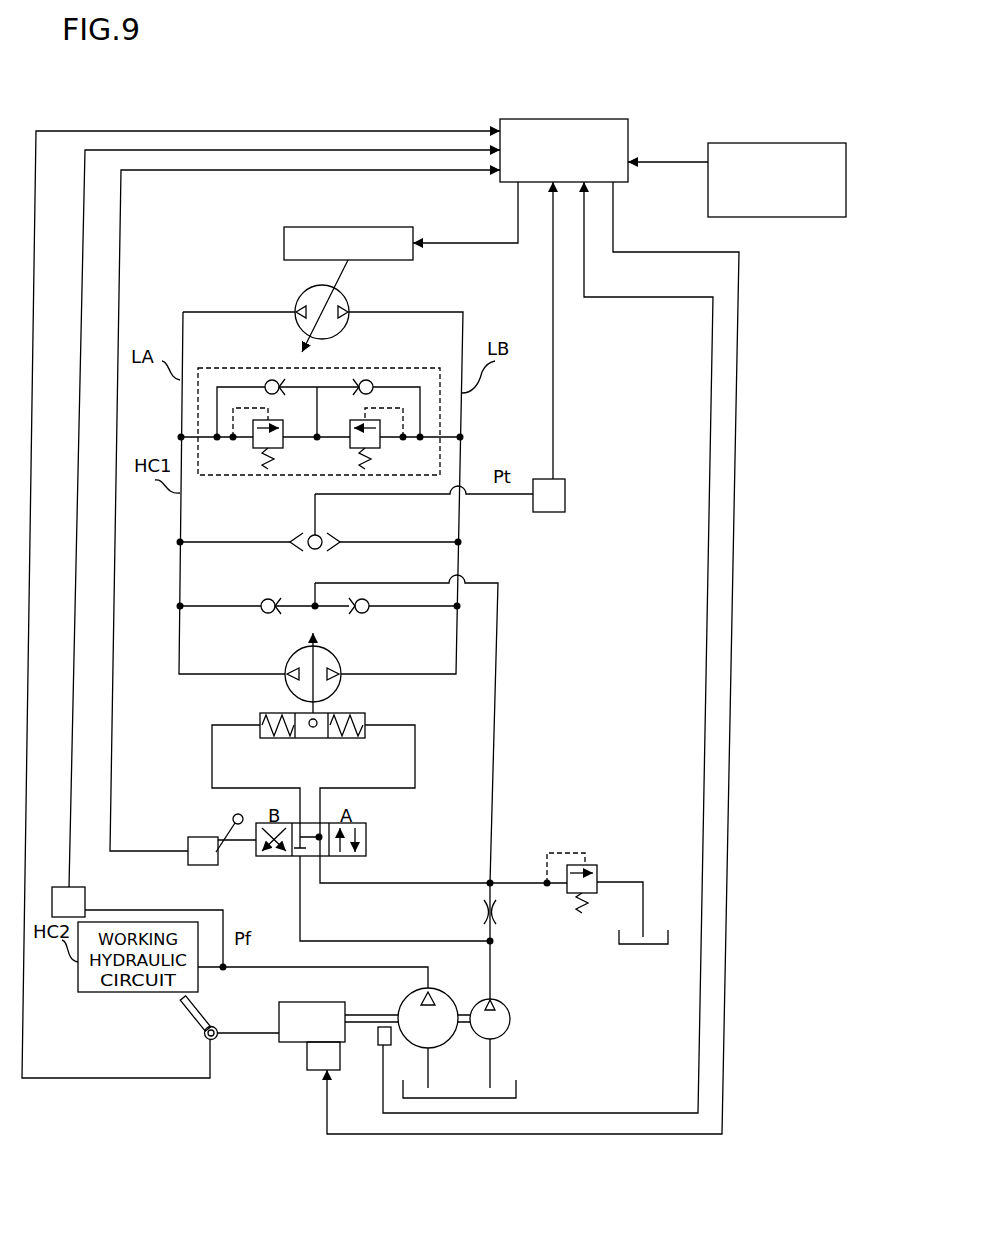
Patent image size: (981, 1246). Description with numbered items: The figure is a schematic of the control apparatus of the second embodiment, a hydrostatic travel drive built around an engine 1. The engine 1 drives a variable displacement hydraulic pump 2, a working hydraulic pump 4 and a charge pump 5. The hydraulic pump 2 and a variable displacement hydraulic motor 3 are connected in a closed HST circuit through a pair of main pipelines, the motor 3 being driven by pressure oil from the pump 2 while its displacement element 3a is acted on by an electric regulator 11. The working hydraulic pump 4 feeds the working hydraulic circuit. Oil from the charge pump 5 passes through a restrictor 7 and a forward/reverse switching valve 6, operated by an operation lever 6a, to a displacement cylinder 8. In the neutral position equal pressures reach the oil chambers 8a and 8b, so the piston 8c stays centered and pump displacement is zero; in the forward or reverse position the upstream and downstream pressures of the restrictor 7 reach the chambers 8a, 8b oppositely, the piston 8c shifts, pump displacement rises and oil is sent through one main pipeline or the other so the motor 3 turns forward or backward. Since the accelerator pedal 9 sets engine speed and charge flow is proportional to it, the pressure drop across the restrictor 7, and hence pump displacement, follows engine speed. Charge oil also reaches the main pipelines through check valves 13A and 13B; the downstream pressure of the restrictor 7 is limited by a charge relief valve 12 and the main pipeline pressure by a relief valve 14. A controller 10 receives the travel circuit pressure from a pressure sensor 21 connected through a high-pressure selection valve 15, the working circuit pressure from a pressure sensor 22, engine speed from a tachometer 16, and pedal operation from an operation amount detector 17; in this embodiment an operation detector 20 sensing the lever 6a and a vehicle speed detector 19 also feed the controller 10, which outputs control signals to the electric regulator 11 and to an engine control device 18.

The engine 1 is at (280, 1043).
The variable displacement hydraulic pump 2 is at (288, 662).
The variable displacement hydraulic motor 3 is at (302, 292).
The motor displacement control element 3a is at (343, 277).
The working hydraulic pump 4 is at (446, 1043).
The charge pump 5 is at (507, 1035).
The forward/reverse switching valve 6 is at (368, 835).
The operation lever 6a is at (232, 830).
The restrictor 7 is at (480, 912).
The displacement cylinder 8 is at (319, 731).
The oil chamber 8a is at (272, 740).
The oil chamber 8b is at (345, 740).
The piston 8c is at (311, 740).
The accelerator pedal 9 is at (190, 1019).
The controller 10 is at (630, 133).
The electric regulator 11 is at (350, 226).
The charge relief valve 12 is at (603, 864).
The check valve 13A is at (262, 614).
The check valve 13B is at (370, 613).
The relief valve 14 is at (414, 369).
The high-pressure selection valve 15 is at (306, 532).
The tachometer 16 is at (380, 1047).
The operation amount detector 17 is at (218, 1025).
The engine control device 18 is at (306, 1065).
The vehicle speed detector 19 is at (822, 143).
The operation detector 20 is at (203, 865).
The pressure sensor 21 is at (565, 493).
The pressure sensor 22 is at (86, 896).